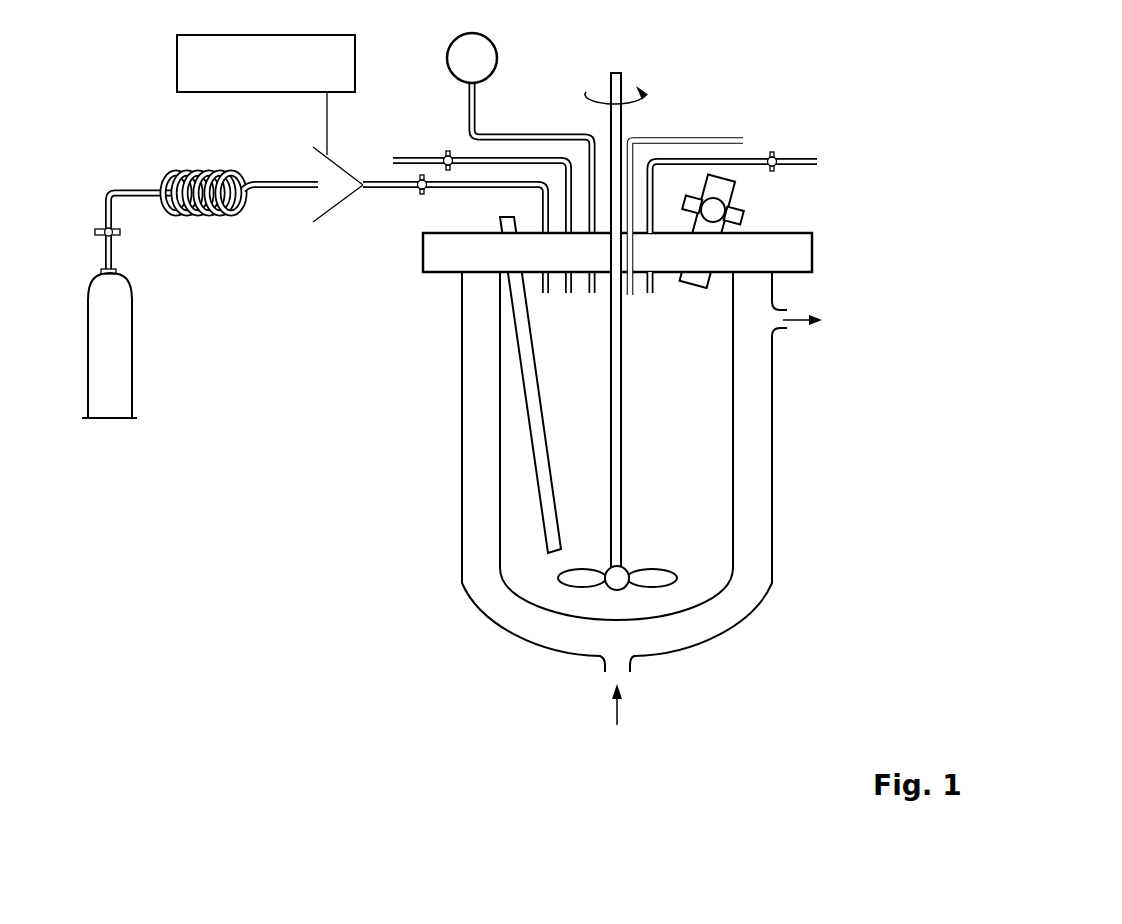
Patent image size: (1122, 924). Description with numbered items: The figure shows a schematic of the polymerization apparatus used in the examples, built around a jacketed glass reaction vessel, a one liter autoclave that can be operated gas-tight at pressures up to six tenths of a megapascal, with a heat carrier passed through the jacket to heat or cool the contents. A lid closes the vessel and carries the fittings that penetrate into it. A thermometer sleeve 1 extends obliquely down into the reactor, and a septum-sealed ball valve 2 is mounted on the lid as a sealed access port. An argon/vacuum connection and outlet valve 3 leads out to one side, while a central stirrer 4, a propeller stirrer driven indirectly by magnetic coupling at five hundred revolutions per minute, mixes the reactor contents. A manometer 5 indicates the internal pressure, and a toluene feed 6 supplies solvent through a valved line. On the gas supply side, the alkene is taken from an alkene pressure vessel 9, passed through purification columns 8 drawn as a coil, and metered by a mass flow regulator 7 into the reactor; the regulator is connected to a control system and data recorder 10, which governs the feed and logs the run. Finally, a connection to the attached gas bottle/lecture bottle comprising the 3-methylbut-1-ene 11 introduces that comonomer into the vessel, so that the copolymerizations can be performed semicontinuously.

The thermometer sleeve 1 is at (538, 385).
The septum-sealed ball valve 2 is at (718, 231).
The argon/vacuum connection and outlet valve 3 is at (733, 199).
The stirrer 4 is at (620, 324).
The manometer 5 is at (519, 163).
The toluene feed 6 is at (481, 199).
The mass flow regulator 7 is at (429, 220).
The purification columns 8 is at (240, 170).
The alkene pressure vessel 9 is at (130, 305).
The control system and data recorder 10 is at (266, 95).
The connection to the attached gas bottle/lecture bottle comprising the 3-methylbut- 11 is at (686, 196).